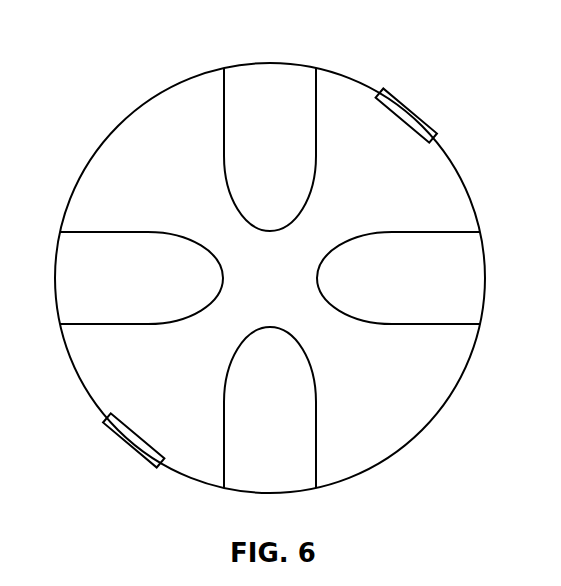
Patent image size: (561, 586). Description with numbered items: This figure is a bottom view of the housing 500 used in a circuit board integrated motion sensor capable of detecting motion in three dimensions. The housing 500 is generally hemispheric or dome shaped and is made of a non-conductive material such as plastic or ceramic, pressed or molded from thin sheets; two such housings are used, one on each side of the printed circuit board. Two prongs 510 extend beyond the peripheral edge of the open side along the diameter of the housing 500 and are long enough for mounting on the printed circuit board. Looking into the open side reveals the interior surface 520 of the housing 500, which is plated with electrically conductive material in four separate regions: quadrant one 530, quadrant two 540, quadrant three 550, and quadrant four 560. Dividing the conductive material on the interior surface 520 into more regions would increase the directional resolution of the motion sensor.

The housing 500 is at (122, 56).
The prongs 510 is at (410, 107).
The interior surface 520 is at (292, 290).
The quadrant one 530 is at (398, 233).
The quadrant two 540 is at (315, 423).
The quadrant three 550 is at (100, 323).
The quadrant four 560 is at (224, 150).